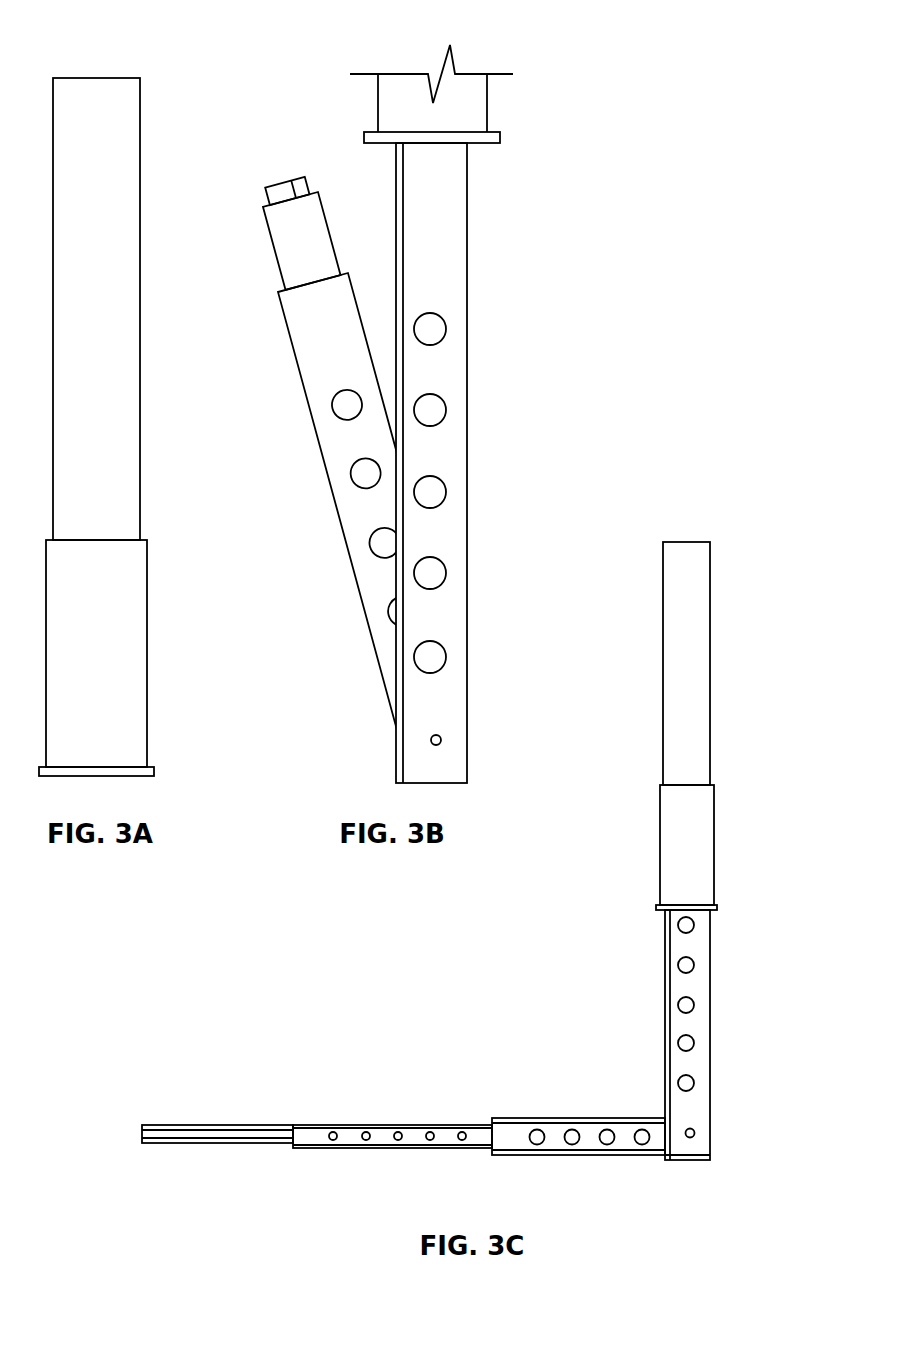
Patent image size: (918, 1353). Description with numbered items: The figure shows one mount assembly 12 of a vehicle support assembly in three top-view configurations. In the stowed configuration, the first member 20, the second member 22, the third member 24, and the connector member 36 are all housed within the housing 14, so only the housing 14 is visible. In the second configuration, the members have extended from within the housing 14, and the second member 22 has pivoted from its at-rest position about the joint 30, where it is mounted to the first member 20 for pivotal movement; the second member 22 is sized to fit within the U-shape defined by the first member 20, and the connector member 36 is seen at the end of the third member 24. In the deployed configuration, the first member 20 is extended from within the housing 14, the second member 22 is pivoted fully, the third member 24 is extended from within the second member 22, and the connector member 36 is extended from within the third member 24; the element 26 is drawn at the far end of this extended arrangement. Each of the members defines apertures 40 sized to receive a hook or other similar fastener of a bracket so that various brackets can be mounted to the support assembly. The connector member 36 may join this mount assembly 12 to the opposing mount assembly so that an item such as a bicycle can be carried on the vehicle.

In FIG. 3A, the mount assembly 12 is at (125, 400).
In FIG. 3B, the mount assembly 12 is at (389, 399).
In FIG. 3C, the mount assembly 12 is at (462, 861).
In FIG. 3A, the housing 14 is at (140, 100).
In FIG. 3B, the housing 14 is at (407, 82).
In FIG. 3C, the housing 14 is at (705, 592).
In FIG. 3B, the first member 20 is at (440, 215).
In FIG. 3C, the first member 20 is at (700, 988).
In FIG. 3B, the second member 22 is at (348, 447).
In FIG. 3C, the second member 22 is at (596, 1157).
In FIG. 3B, the third member 24 is at (299, 232).
In FIG. 3C, the third member 24 is at (385, 1123).
In FIG. 3C, the extension rod 26 is at (228, 1145).
In FIG. 3B, the joint 30 is at (452, 739).
In FIG. 3C, the joint 30 is at (702, 1132).
In FIG. 3B, the connector member 36 is at (287, 191).
In FIG. 3B, the apertures 40 is at (352, 473).
In FIG. 3C, the apertures 40 is at (398, 1141).